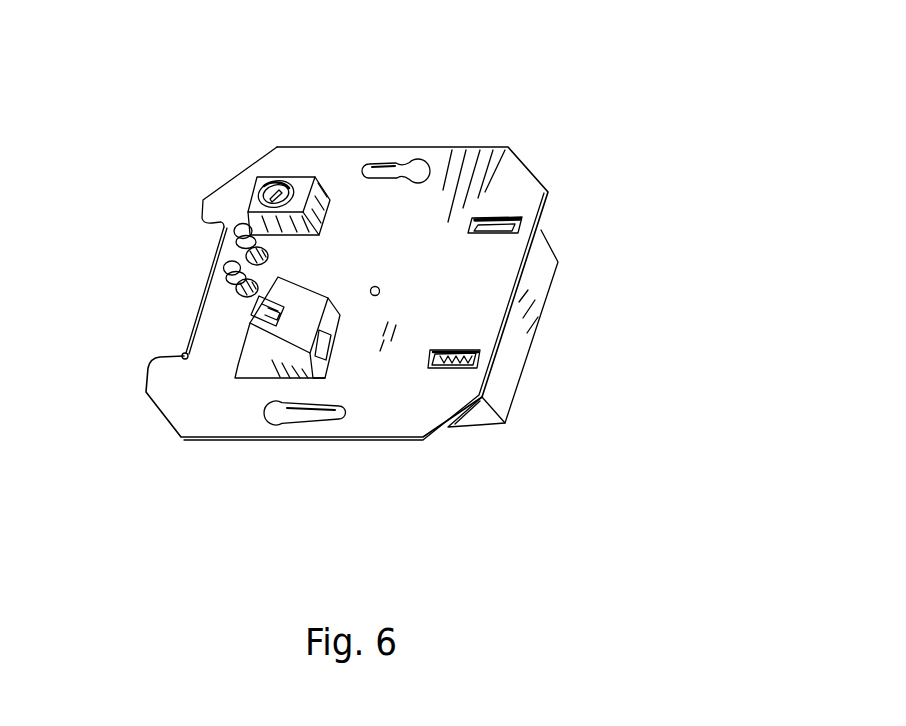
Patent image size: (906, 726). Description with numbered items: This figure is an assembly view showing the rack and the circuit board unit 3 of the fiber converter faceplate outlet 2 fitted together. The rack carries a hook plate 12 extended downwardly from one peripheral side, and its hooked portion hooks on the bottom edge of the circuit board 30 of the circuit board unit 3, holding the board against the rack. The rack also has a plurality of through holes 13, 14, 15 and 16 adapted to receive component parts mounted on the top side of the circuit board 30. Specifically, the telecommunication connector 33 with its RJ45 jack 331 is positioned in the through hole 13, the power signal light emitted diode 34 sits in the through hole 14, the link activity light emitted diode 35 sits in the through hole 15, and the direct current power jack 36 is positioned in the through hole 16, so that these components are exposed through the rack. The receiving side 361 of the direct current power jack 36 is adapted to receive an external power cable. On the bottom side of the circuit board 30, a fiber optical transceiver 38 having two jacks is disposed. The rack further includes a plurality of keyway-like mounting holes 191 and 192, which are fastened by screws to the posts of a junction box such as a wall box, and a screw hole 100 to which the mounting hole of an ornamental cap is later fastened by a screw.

The fiber converter faceplate outlet 2 is at (477, 112).
The circuit board unit 3 is at (562, 329).
The hook plate 12 is at (183, 355).
The through hole 13 is at (206, 405).
The through hole 14 is at (266, 264).
The through hole 15 is at (237, 296).
The through hole 16 is at (325, 215).
The circuit board 30 is at (457, 430).
The telecommunication connector 33 is at (258, 372).
The power signal light emitted diode 34 is at (233, 236).
The link activity light emitted diode 35 is at (227, 268).
The direct current power jack 36 is at (330, 145).
The fiber optical transceiver 38 is at (513, 370).
The screw hole 100 is at (381, 290).
The keyway-like mounting hole 191 is at (393, 162).
The keyway-like mounting hole 192 is at (305, 425).
The RJ45 jack 331 is at (248, 322).
The receiving side 361 is at (262, 160).